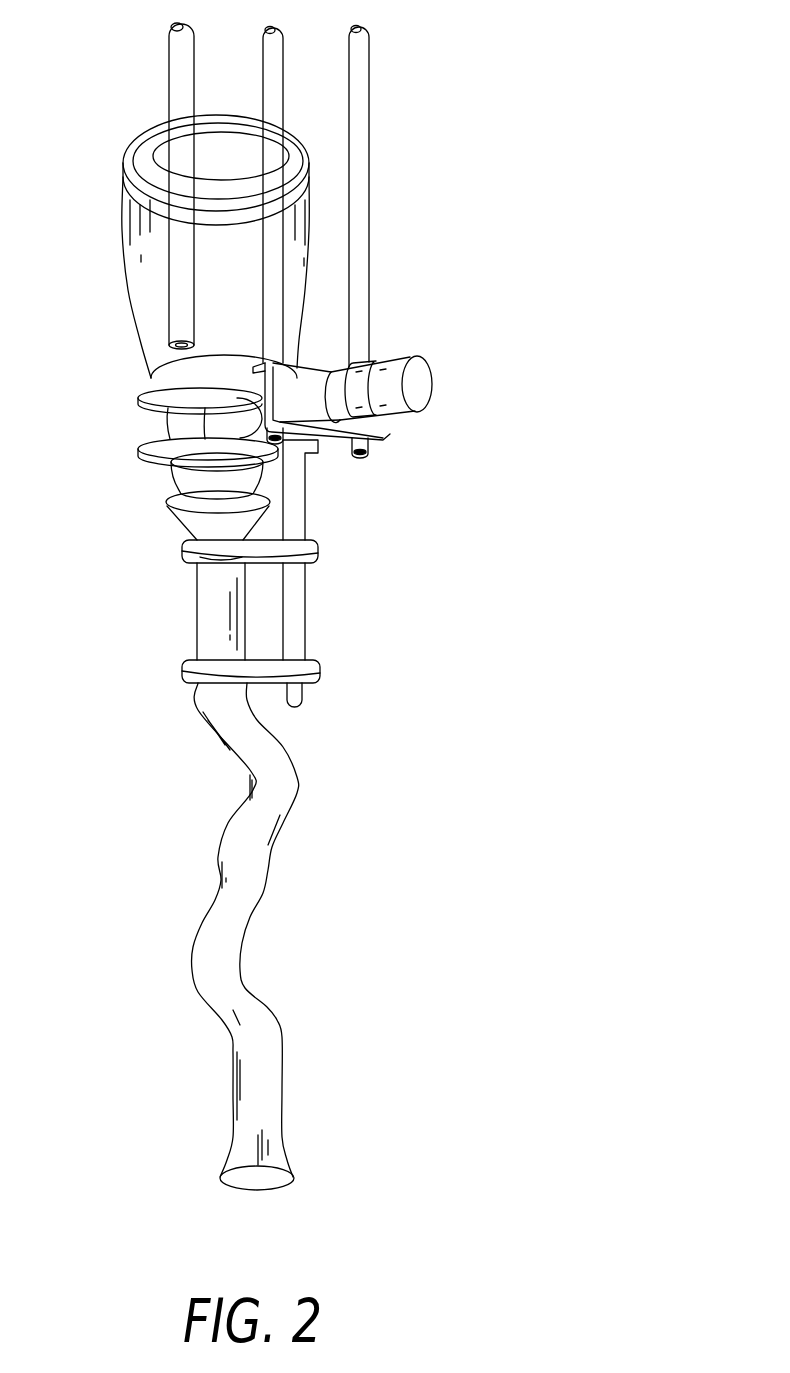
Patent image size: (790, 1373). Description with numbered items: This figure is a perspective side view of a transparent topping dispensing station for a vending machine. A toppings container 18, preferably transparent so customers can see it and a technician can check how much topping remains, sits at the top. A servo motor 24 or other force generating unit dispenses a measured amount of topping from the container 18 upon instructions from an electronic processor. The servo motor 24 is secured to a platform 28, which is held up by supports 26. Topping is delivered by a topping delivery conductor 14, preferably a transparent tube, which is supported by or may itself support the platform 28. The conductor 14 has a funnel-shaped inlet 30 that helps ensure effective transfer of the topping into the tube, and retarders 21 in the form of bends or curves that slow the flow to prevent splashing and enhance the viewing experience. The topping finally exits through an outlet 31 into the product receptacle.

The supports 26 is at (358, 183).
The toppings container 18 is at (155, 297).
The platform 28 is at (290, 387).
The servo motor 24 is at (387, 415).
The funnel-shaped inlet 30 is at (188, 515).
The topping delivery conductor 14 is at (210, 607).
The retarders 21 is at (273, 813).
The outlet 31 is at (275, 1178).